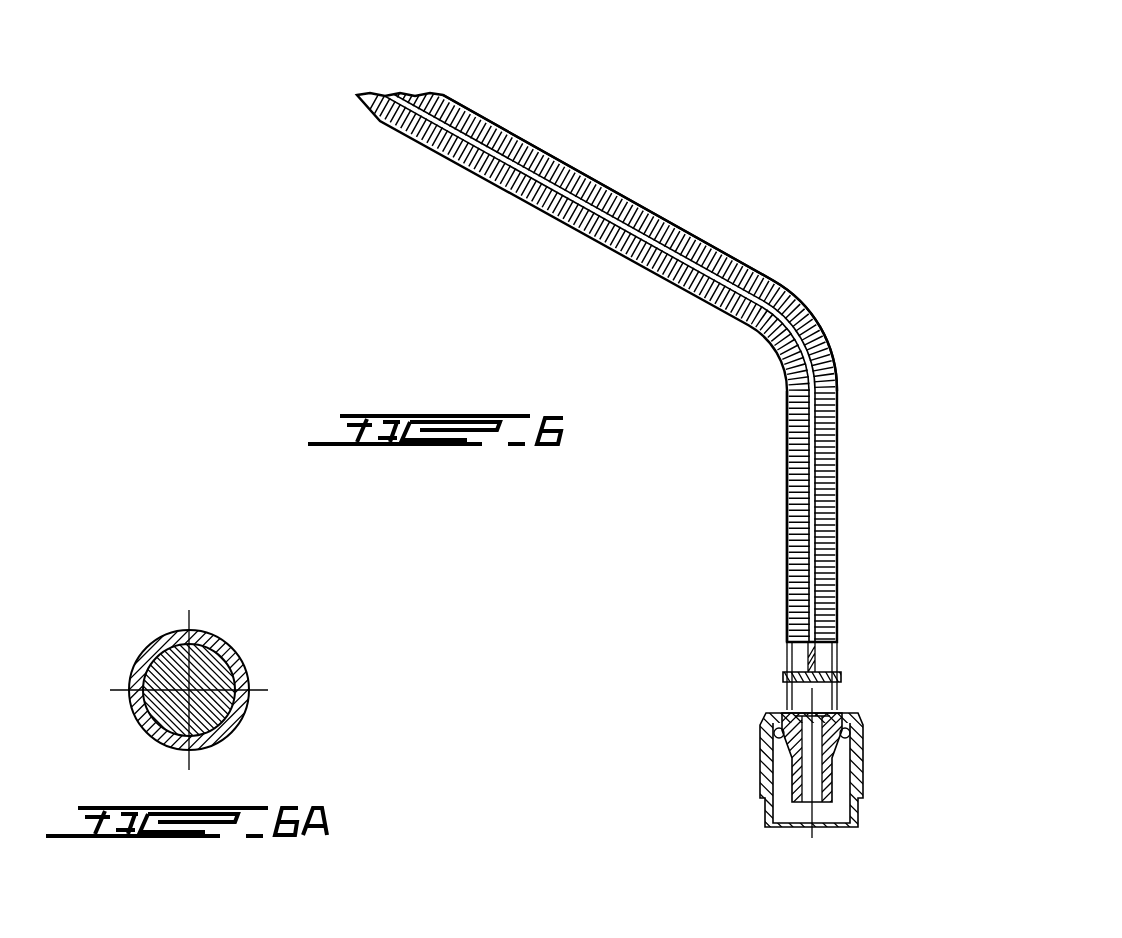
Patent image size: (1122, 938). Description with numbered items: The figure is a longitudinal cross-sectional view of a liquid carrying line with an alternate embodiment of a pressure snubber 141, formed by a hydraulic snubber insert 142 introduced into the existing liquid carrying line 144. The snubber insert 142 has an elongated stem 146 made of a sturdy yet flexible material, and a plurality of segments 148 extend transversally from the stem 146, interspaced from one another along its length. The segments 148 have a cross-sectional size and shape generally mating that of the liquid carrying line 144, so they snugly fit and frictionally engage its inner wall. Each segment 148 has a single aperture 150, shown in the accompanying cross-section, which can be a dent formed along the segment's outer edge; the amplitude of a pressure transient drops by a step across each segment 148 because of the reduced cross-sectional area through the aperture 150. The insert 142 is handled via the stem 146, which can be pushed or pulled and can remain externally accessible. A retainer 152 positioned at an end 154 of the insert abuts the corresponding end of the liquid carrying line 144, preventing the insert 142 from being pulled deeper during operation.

In FIG. 6, the pressure snubber 141 is at (965, 351).
In FIG. 6, the hydraulic snubber insert 142 is at (585, 190).
In FIG. 6, the liquid carrying line 144 is at (829, 356).
In FIG. 6, the elongated stem 146 is at (789, 548).
In FIG. 6, the segments 148 is at (662, 233).
In FIG. 6A, the aperture 150 is at (176, 650).
In FIG. 6, the retainer 152 is at (799, 668).
In FIG. 6, the end of the insert 154 is at (838, 670).